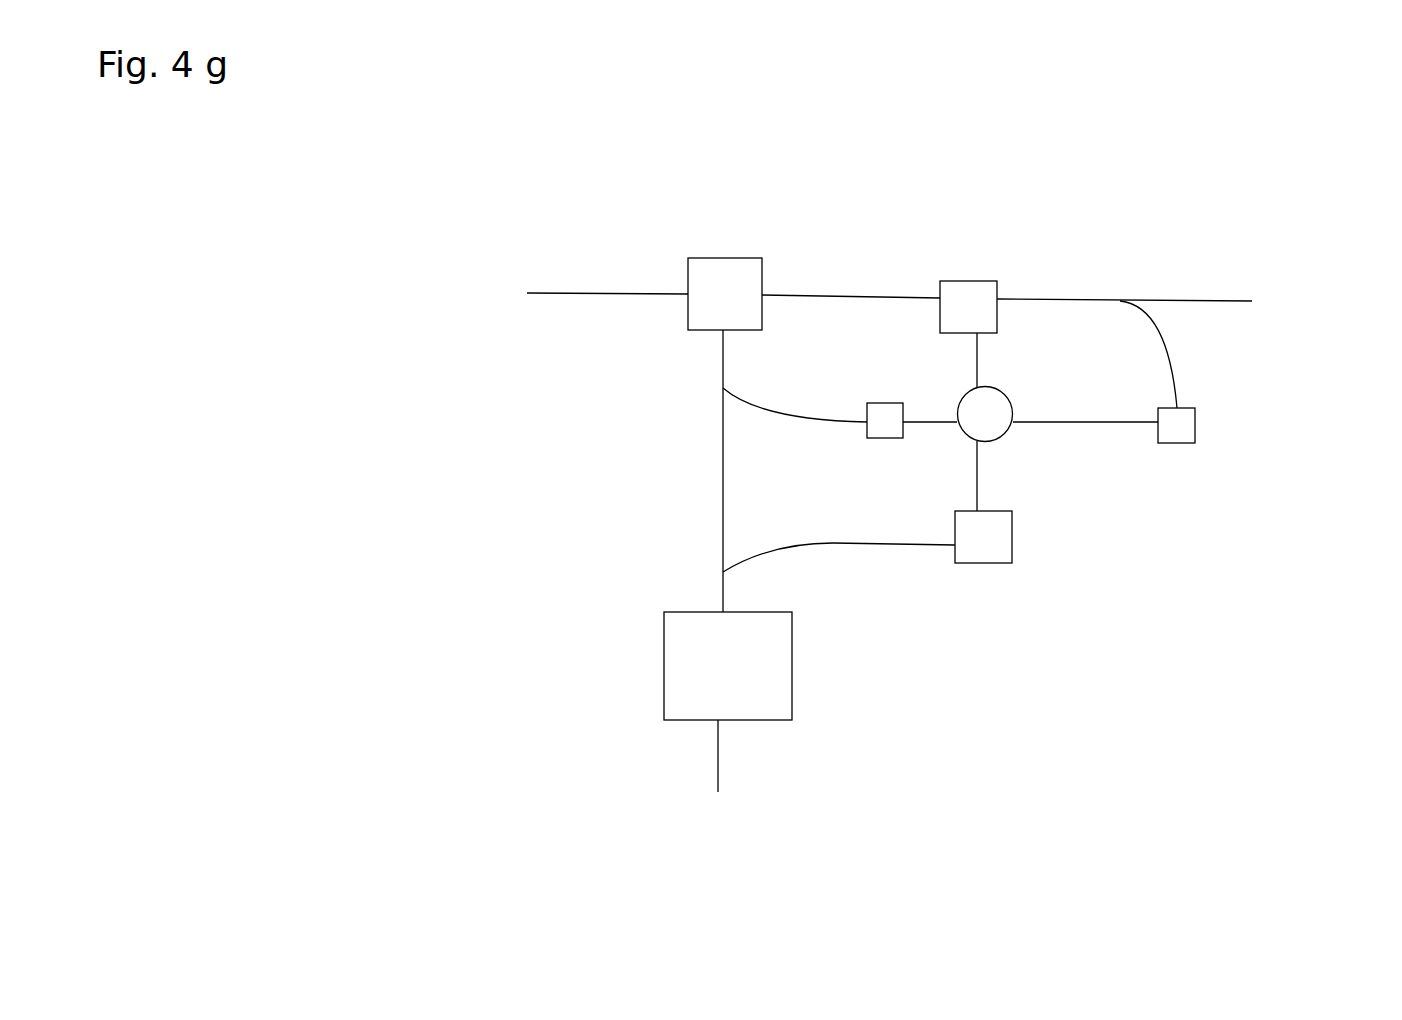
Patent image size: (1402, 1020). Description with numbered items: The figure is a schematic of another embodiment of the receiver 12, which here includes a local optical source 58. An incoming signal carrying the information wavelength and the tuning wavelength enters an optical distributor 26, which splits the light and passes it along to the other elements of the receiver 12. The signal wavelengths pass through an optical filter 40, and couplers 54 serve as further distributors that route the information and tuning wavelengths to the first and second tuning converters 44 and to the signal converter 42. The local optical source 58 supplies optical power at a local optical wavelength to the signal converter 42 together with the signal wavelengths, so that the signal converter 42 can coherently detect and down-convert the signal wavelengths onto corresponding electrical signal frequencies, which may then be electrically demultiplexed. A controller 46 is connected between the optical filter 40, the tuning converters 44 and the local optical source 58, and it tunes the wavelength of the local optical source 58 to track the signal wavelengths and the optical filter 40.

The receiver 12 is at (909, 525).
The optical distributor 26 is at (762, 275).
The optical filter 40 is at (997, 317).
The signal converter 42 is at (792, 650).
The tuning converter 44 is at (883, 438).
The controller 46 is at (995, 440).
The coupler 54 is at (702, 540).
The local optical source 58 is at (1012, 545).